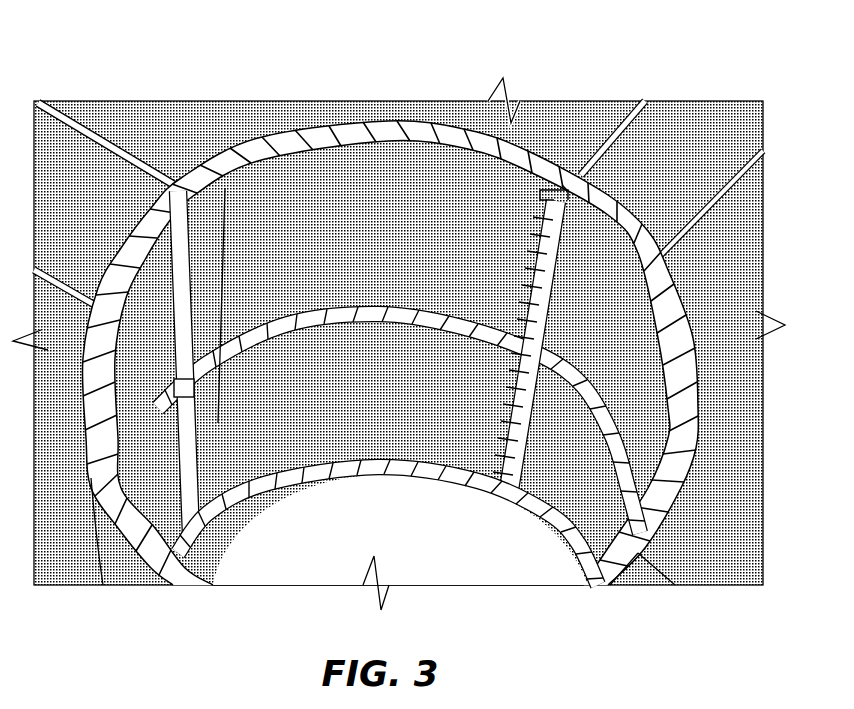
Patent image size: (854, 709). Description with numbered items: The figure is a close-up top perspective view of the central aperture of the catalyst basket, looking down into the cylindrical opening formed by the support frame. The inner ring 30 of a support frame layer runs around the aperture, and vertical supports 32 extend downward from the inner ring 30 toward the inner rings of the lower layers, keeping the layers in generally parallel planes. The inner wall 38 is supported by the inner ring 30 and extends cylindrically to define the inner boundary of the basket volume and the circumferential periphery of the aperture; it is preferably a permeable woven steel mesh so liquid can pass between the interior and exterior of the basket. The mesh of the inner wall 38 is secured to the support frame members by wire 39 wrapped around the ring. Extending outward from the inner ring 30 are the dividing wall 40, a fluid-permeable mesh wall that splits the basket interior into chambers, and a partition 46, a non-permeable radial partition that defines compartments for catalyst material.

The inner ring 30 is at (278, 112).
The vertical supports 32 is at (182, 230).
The inner wall 38 is at (400, 193).
The wire 39 is at (323, 126).
The dividing wall 40 is at (722, 272).
The partitions 46 is at (83, 146).